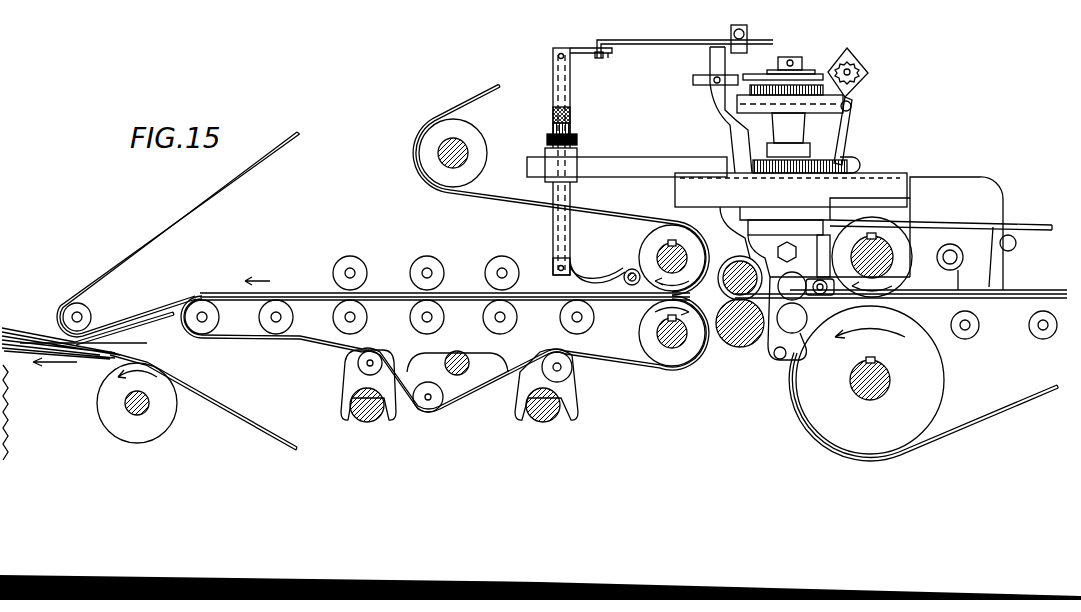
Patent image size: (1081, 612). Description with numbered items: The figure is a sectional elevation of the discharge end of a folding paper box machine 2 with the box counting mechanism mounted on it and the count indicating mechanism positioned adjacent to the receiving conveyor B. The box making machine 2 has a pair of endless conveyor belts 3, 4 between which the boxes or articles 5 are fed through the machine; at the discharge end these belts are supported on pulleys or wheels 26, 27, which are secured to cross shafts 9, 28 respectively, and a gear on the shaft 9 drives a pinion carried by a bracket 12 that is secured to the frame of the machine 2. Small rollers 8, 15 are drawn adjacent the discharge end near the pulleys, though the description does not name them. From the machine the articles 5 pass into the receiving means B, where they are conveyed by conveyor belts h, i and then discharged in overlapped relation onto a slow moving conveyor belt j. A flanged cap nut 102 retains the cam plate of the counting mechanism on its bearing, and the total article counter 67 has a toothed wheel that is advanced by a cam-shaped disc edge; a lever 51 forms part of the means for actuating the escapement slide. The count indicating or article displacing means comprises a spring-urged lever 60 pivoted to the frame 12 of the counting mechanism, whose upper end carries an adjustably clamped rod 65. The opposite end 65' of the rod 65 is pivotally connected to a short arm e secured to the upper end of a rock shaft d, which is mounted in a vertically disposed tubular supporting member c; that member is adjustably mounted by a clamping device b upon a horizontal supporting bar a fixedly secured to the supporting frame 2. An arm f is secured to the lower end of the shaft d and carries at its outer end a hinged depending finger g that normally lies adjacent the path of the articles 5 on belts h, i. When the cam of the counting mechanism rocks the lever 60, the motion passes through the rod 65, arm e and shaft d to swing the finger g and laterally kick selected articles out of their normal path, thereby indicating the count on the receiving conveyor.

The boxes or articles 5 is at (13, 327).
The slow moving conveyor belt j is at (193, 391).
The receiving conveyor B is at (393, 273).
The conveyor belt i is at (527, 365).
The conveyor belt h is at (463, 317).
The tubular supporting member c is at (572, 88).
The rock shaft d is at (553, 80).
The short arm e is at (583, 47).
The rod 65 is at (685, 30).
The end of rod 65' is at (623, 61).
The clamping device b is at (578, 150).
The horizontal supporting bar a is at (600, 160).
The arm f is at (577, 263).
The depending finger g is at (630, 286).
The box making machine frame 2 is at (669, 192).
The lever 60 is at (718, 96).
The flanged cap nut 102 is at (797, 57).
The bracket 12 is at (807, 145).
The counter 67 is at (862, 70).
The lever 51 is at (848, 128).
The pulley or wheel 27 is at (893, 230).
The cross shaft 28 is at (880, 247).
The endless conveyor belt 4 is at (1007, 223).
The roller 8 is at (790, 278).
The roller 15 is at (797, 327).
The pulley or wheel 26 is at (943, 371).
The cross shaft 9 is at (890, 383).
The endless conveyor belt 3 is at (1013, 397).